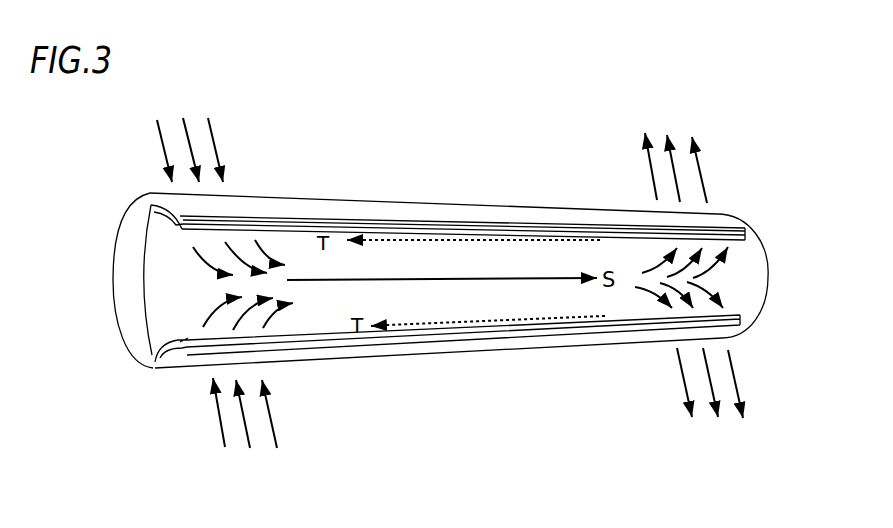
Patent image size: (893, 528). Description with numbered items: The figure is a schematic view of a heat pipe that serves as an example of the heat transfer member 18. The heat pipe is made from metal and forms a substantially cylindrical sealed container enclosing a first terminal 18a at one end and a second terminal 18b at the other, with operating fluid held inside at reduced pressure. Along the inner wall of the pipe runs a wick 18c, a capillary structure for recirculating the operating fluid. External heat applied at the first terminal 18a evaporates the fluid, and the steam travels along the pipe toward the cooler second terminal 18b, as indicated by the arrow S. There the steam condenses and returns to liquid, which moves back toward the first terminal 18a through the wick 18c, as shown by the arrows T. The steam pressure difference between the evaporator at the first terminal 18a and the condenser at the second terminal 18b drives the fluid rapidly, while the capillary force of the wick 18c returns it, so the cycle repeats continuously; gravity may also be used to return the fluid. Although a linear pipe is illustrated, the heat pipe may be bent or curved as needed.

The heat transfer member 18 is at (429, 203).
The first terminal 18a is at (125, 283).
The second terminal 18b is at (768, 276).
The wick 18c is at (148, 354).